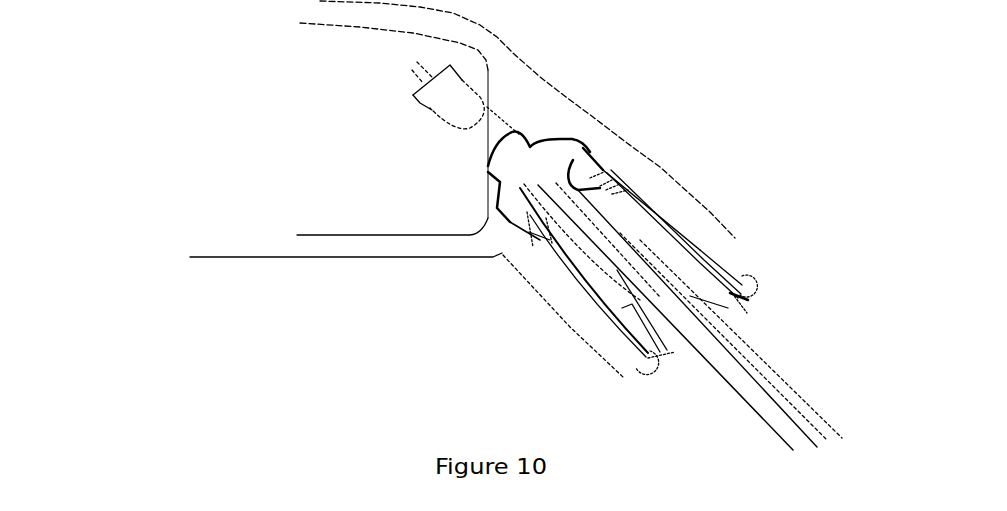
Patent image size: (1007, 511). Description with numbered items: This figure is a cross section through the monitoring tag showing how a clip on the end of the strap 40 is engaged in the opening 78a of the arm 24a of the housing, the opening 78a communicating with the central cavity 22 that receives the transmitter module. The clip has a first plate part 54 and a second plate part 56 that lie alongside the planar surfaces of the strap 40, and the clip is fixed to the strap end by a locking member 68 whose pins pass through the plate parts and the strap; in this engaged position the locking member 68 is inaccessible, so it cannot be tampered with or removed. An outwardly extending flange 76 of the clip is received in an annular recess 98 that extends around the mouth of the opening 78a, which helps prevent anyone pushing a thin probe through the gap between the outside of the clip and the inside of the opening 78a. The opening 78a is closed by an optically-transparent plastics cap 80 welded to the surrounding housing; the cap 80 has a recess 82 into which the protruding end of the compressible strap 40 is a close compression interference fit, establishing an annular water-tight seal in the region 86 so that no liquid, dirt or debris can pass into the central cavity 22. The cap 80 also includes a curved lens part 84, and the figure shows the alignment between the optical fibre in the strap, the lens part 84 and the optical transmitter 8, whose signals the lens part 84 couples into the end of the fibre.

The optical transmitter 8 is at (447, 100).
The central cavity 22 is at (348, 200).
The arm 24a is at (687, 215).
The strap 40 is at (780, 400).
The first plate part 54 is at (667, 358).
The second plate part 56 is at (733, 307).
The locking member 68 is at (588, 283).
The flange 76 is at (748, 298).
The opening 78a is at (700, 253).
The optically-transparent plastics cap 80 is at (577, 160).
The recess 82 is at (585, 188).
The curved lens part 84 is at (510, 150).
The seal region 86 is at (523, 207).
The annular recess 98 is at (741, 277).